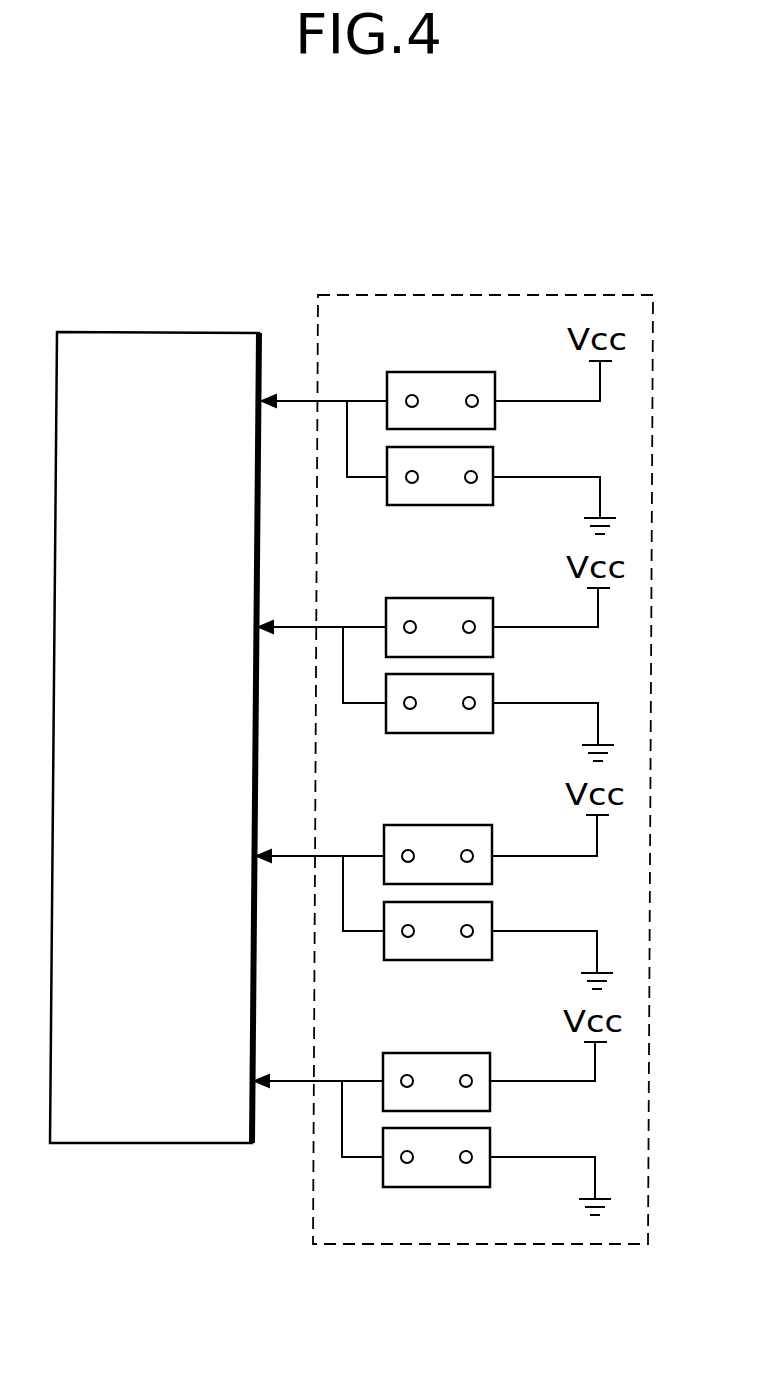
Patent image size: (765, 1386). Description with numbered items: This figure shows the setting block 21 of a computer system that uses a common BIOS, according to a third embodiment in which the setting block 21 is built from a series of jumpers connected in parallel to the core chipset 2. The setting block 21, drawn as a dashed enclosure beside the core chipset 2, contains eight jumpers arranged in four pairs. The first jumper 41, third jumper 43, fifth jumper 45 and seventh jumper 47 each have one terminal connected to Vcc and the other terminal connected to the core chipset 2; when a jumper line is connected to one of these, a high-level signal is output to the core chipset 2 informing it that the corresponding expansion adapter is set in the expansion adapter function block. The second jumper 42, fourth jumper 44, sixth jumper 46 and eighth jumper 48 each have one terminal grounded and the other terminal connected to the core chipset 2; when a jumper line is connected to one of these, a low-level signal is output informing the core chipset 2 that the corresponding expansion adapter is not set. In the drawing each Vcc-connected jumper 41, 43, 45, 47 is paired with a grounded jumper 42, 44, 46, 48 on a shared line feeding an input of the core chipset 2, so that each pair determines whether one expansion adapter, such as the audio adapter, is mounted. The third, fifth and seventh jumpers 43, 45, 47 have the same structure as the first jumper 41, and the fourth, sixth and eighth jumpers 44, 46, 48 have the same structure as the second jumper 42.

The core chipset 2 is at (154, 699).
The setting block 21 is at (483, 724).
The first jumper 41 is at (445, 376).
The second jumper 42 is at (483, 467).
The third jumper 43 is at (443, 604).
The fourth jumper 44 is at (480, 693).
The fifth jumper 45 is at (439, 831).
The sixth jumper 46 is at (478, 920).
The seventh jumper 47 is at (437, 1057).
The eighth jumper 48 is at (475, 1149).